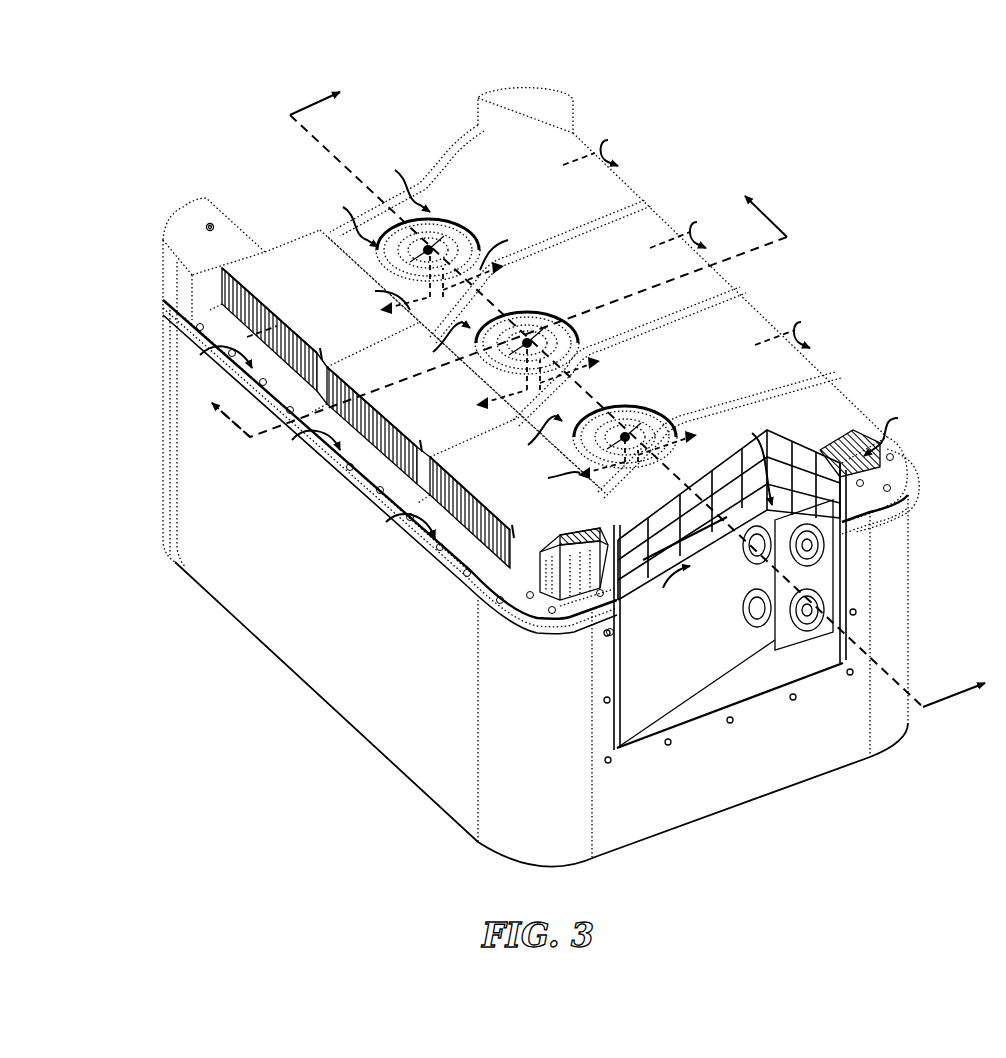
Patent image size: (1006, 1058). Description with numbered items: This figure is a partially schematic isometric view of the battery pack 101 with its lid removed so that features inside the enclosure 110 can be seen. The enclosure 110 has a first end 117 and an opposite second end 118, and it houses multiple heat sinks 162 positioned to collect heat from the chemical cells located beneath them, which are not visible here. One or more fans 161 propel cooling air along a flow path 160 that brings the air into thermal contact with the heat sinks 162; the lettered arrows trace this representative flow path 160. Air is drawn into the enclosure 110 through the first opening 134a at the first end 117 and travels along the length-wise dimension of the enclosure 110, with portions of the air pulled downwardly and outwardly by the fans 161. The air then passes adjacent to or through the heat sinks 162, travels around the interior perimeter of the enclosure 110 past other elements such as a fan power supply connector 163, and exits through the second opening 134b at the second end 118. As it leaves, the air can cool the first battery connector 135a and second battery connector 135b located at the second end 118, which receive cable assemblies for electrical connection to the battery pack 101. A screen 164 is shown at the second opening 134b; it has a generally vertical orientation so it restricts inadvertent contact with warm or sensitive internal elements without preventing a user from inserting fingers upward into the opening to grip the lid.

The battery pack 101 is at (893, 121).
The enclosure 110 is at (286, 718).
The first end 117 is at (136, 384).
The second end 118 is at (717, 792).
The first opening 134a is at (296, 218).
The second opening 134b is at (782, 658).
The first battery connector 135a is at (828, 538).
The second battery connector 135b is at (828, 600).
The flow path 160 is at (355, 264).
The fan 161 is at (468, 248).
The heat sink 162 is at (546, 133).
The fan power supply connector 163 is at (570, 592).
The screen 164 is at (767, 428).